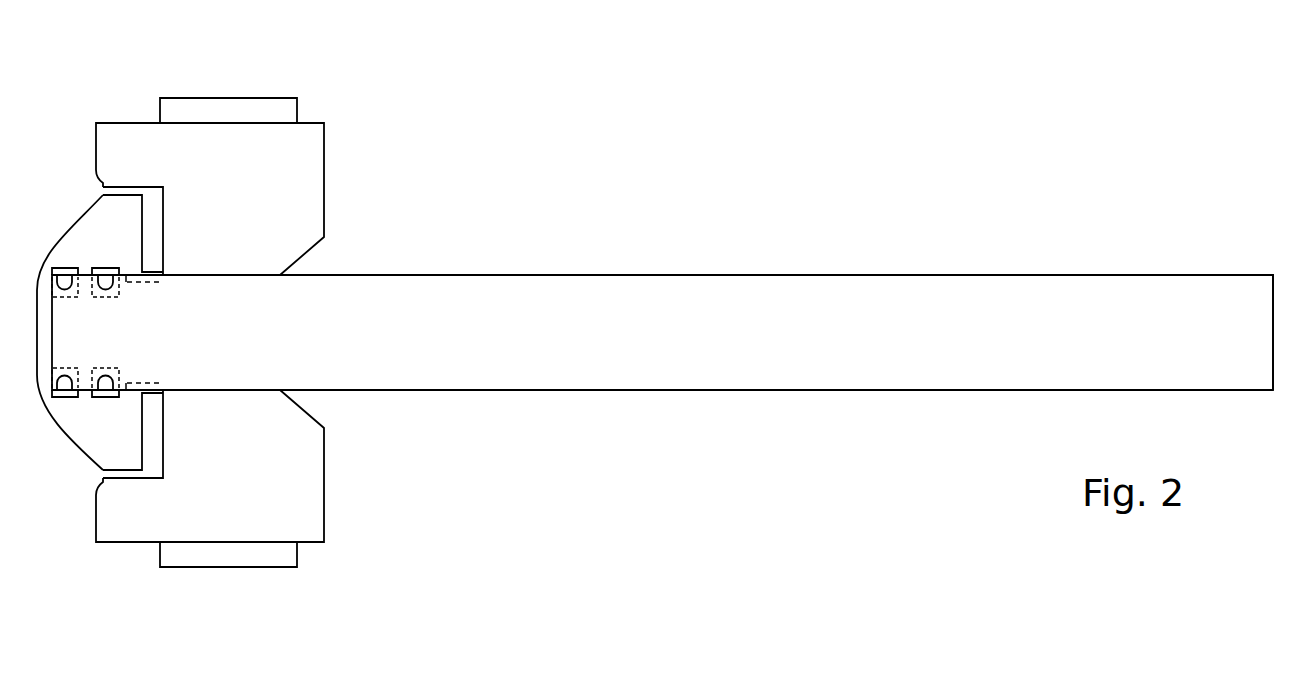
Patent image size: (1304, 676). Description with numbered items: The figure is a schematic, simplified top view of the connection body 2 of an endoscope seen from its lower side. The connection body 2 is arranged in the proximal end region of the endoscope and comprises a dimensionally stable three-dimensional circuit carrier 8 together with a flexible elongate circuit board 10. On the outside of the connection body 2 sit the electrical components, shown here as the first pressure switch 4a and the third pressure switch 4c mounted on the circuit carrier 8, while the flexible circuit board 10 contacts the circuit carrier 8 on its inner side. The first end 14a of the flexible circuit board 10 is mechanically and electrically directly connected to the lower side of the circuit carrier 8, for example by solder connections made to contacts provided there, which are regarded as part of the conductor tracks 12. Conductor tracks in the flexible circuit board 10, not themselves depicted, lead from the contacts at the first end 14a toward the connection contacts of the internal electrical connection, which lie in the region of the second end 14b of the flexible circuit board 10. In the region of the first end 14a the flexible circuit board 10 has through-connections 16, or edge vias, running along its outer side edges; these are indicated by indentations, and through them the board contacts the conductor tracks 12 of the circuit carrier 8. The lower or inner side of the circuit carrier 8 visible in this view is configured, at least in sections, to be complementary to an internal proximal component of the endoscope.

The connection body 2 is at (873, 194).
The first pressure switch 4a is at (263, 553).
The third pressure switch 4c is at (224, 108).
The circuit carrier 8 is at (298, 187).
The flexible circuit board 10 is at (662, 300).
The conductor tracks 12 is at (153, 443).
The first end 14a is at (82, 248).
The second end 14b is at (1206, 270).
The through-connections 16 is at (63, 387).